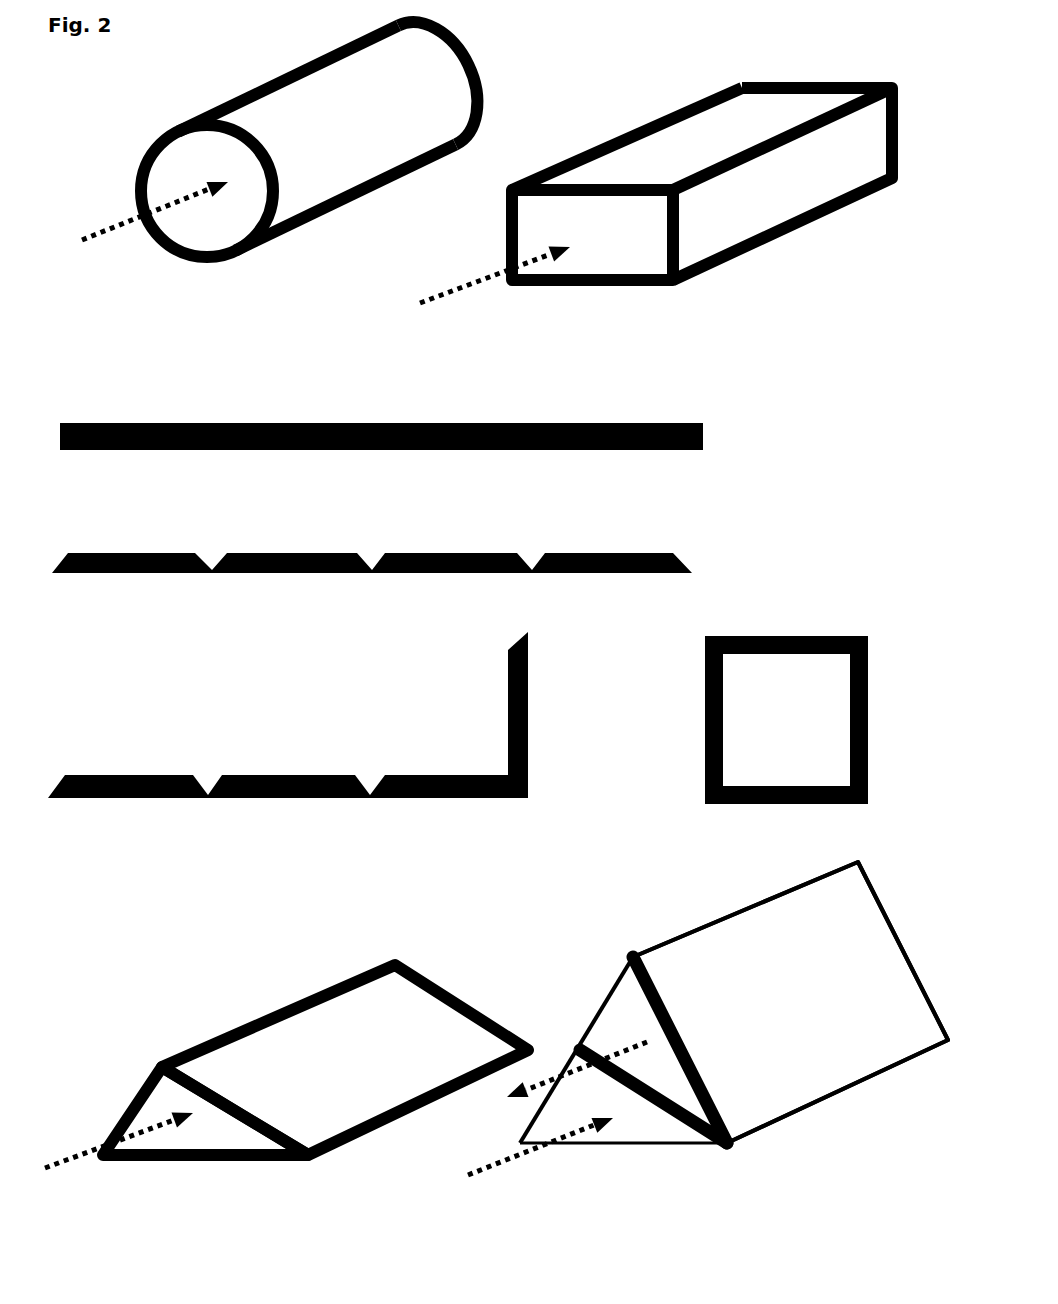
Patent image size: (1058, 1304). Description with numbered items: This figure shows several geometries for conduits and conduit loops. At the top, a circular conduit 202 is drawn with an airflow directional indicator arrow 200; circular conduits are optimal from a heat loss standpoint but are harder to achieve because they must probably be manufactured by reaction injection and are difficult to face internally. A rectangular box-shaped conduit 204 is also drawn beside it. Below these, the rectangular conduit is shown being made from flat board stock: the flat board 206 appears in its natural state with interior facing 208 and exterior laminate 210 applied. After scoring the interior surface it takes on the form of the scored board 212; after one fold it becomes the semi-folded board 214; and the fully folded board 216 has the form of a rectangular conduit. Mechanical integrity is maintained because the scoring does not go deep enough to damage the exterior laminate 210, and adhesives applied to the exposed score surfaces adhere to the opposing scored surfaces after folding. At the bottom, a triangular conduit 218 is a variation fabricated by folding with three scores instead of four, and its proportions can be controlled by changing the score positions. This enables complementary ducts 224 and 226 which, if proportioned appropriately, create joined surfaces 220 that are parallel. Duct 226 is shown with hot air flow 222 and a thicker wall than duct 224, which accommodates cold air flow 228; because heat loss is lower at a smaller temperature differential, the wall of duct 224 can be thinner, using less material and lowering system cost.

The airflow directional indicator arrow 200 is at (104, 221).
The circular conduit 202 is at (272, 84).
The rectangular light guide 204 is at (636, 122).
The rectangular conduit / flat board 206 is at (273, 412).
The interior facing 208 is at (569, 420).
The exterior laminate 210 is at (620, 455).
The scored board 212 is at (278, 536).
The semi-folded board 214 is at (268, 758).
The fully folded board 216 is at (775, 631).
The triangular conduit 218 is at (249, 1008).
The joined surfaces 220 is at (560, 1067).
The hot air flow 222 is at (511, 1103).
The duct 224 is at (640, 1150).
The duct 226 is at (784, 1085).
The cold air flow 228 is at (496, 1176).